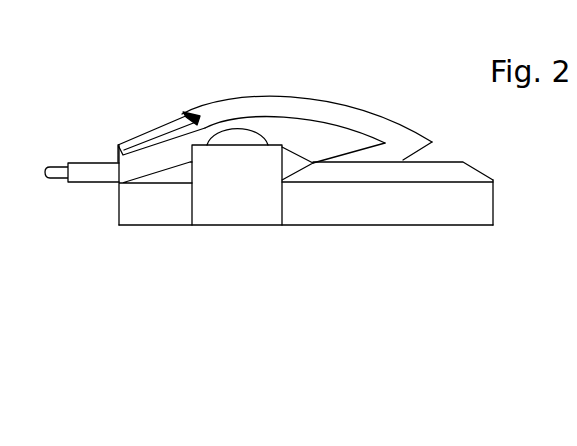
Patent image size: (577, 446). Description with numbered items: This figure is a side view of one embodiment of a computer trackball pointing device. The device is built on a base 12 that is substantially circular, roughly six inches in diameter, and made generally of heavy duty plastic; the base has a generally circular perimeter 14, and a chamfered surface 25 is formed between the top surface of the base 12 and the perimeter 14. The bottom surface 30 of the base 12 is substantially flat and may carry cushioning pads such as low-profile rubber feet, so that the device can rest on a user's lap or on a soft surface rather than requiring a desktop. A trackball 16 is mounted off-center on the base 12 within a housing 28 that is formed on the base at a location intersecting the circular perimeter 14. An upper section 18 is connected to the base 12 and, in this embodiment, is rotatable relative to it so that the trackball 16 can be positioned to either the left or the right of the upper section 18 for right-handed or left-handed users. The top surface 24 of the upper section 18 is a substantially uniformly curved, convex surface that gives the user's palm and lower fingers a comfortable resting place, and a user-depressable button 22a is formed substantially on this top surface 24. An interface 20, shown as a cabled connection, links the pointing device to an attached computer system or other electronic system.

The base 12 is at (397, 213).
The perimeter 14 is at (119, 207).
The trackball 16 is at (255, 127).
The upper section 18 is at (338, 142).
The interface 20 is at (80, 183).
The user-depressable button 22a is at (148, 128).
The top surface 24 is at (323, 101).
The chamfered surface 25 is at (477, 166).
The housing 28 is at (237, 195).
The bottom surface 30 is at (323, 226).